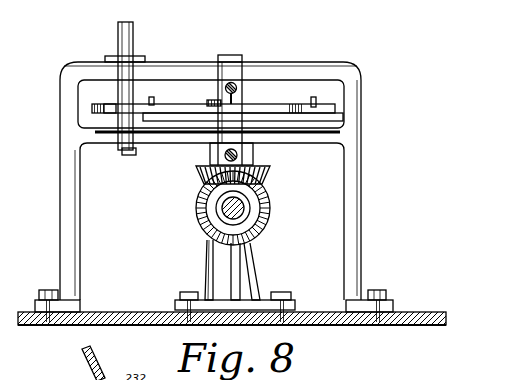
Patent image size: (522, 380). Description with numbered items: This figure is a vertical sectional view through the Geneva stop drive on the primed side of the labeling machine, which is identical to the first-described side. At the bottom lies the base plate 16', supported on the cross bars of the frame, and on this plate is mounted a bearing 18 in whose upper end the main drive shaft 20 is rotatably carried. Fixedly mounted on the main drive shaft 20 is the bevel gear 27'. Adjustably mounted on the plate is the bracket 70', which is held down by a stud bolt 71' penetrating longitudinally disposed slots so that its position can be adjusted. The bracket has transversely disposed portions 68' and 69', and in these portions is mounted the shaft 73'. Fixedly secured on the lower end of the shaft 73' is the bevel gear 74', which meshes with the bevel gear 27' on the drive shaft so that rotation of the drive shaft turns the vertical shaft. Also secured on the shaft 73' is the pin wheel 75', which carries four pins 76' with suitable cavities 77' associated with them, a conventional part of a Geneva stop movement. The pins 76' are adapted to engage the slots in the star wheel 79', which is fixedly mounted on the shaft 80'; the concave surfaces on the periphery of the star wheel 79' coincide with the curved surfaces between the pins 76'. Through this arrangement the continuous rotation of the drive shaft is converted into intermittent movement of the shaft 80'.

The base plate 16' is at (234, 305).
The bearing 18 is at (255, 262).
The main drive shaft 20 is at (250, 204).
The bevel gear 27' is at (246, 205).
The transversely disposed portion of bracket 68' is at (210, 170).
The transversely disposed portion of bracket 69' is at (212, 151).
The bracket 70' is at (227, 190).
The stud bolt 71' is at (213, 292).
The shaft 73' is at (236, 99).
The bevel gear 74' is at (251, 154).
The pin wheel 75' is at (217, 100).
The pins 76' is at (245, 98).
The cavities 77' is at (221, 94).
The star wheel 79' is at (100, 99).
The shaft 80' is at (135, 92).